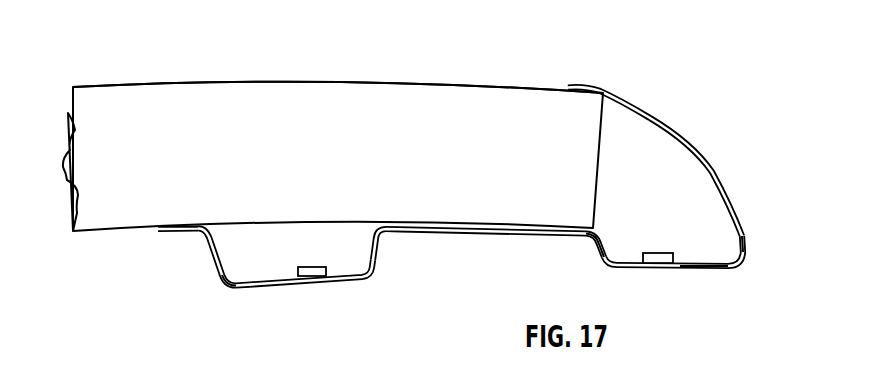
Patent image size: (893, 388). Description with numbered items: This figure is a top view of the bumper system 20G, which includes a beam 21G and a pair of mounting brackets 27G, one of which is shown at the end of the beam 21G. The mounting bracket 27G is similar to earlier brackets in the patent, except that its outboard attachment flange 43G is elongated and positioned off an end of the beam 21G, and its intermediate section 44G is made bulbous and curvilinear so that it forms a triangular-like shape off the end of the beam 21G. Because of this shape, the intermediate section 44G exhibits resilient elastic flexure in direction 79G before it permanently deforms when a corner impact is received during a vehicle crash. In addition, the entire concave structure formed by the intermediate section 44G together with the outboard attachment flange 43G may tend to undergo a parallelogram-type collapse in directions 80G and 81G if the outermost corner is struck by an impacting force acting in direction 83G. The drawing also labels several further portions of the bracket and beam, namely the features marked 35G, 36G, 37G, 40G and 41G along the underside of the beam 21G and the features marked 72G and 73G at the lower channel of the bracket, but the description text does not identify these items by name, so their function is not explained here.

The bumper system 20G is at (528, 62).
The beam 21G is at (377, 80).
The mounting bracket 27G is at (668, 100).
The flange tab 35G is at (172, 233).
The flange 36G is at (452, 233).
The channel bottom wall 37G is at (276, 283).
The first channel side wall 40G is at (213, 250).
The second channel side wall 41G is at (372, 252).
The outboard attachment flange 43G is at (633, 270).
The intermediate section 44G is at (700, 157).
The bend 72G is at (236, 267).
The rib 73G is at (312, 267).
The direction of resilient elastic flexure 79G is at (656, 184).
The direction of parallelogram-type collapse 80G is at (720, 300).
The direction of parallelogram-type collapse 81G is at (562, 300).
The direction of impacting force 83G is at (790, 225).